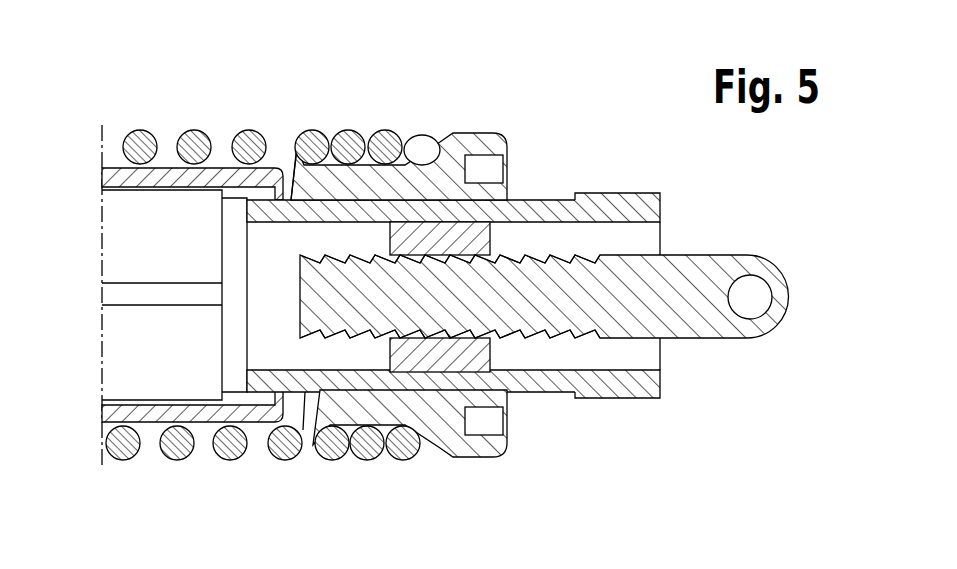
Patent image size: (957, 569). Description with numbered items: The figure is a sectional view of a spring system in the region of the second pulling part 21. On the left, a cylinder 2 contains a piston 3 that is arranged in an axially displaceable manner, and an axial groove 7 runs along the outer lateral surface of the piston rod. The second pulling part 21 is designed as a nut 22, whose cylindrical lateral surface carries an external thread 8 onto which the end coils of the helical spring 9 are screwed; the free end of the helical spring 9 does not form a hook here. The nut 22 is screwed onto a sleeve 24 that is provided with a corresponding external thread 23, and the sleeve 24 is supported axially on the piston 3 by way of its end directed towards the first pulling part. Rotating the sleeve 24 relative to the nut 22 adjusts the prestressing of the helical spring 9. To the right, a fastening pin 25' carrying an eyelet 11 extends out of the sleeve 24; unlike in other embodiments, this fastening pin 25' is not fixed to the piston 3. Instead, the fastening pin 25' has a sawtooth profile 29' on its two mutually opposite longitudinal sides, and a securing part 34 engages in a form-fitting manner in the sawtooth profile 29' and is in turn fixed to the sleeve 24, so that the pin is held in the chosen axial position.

The cylinder 2 is at (123, 170).
The piston 3 is at (162, 217).
The axial groove 7 is at (141, 297).
The external thread 8 is at (320, 200).
The helical spring 9 is at (198, 143).
The eyelet 11 is at (752, 302).
The second pulling part 21 is at (478, 150).
The nut 22 is at (484, 421).
The external thread 23 is at (543, 203).
The sleeve 24 is at (623, 210).
The fastening pin 25' is at (544, 359).
The sawtooth profile 29' is at (450, 386).
The securing part 34 is at (428, 240).